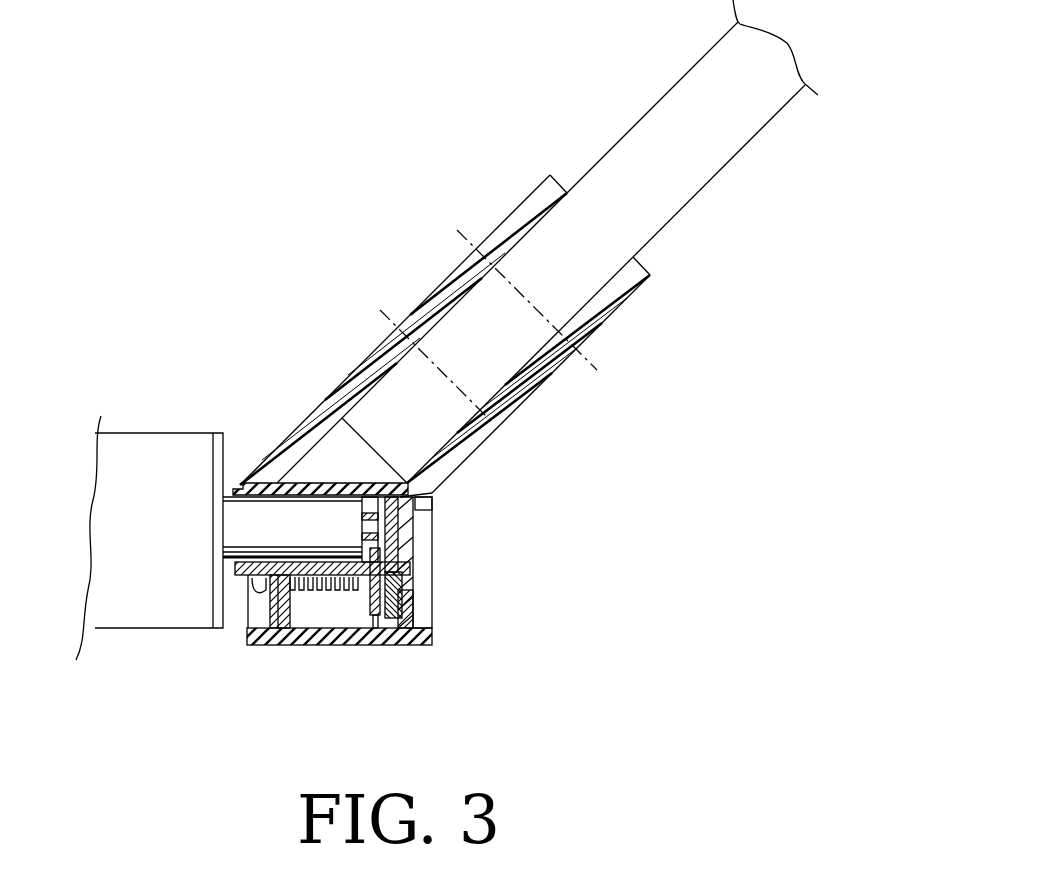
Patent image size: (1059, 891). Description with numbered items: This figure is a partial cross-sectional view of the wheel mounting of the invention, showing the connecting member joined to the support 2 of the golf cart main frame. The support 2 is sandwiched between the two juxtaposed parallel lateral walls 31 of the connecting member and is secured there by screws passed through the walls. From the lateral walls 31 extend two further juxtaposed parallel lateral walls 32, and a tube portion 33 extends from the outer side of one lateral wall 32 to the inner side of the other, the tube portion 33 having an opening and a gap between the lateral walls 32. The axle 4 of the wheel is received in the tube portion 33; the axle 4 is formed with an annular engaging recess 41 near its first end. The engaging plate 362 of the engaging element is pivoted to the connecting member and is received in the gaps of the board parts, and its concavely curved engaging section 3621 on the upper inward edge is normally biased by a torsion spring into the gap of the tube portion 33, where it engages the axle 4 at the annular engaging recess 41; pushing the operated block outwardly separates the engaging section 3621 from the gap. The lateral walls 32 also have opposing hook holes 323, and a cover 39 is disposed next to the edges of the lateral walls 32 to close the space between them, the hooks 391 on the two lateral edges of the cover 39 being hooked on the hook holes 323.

The support 2 is at (673, 90).
The lateral walls 31 is at (460, 272).
The lateral walls 32 is at (410, 607).
The tube portion 33 is at (280, 510).
The axle 4 is at (316, 515).
The annular engaging recess 41 is at (373, 497).
The concavely curved engaging section 3621 is at (405, 532).
The hook holes 323 is at (407, 583).
The hooks 391 is at (417, 618).
The engaging plate 362 is at (378, 643).
The cover 39 is at (332, 643).